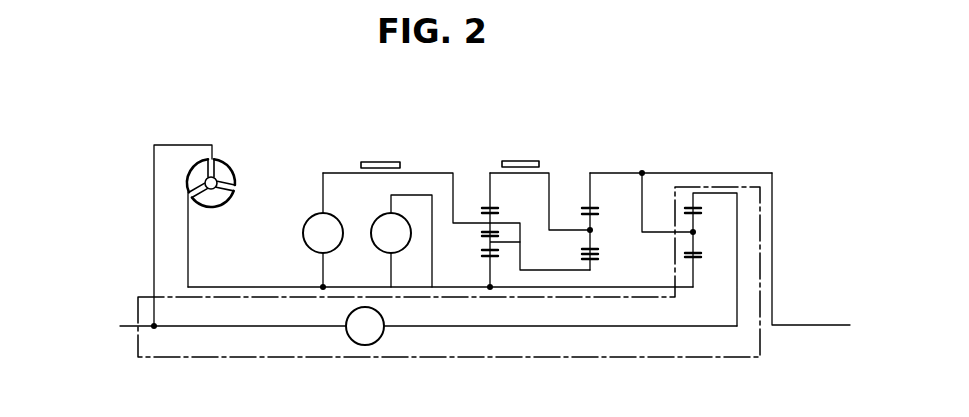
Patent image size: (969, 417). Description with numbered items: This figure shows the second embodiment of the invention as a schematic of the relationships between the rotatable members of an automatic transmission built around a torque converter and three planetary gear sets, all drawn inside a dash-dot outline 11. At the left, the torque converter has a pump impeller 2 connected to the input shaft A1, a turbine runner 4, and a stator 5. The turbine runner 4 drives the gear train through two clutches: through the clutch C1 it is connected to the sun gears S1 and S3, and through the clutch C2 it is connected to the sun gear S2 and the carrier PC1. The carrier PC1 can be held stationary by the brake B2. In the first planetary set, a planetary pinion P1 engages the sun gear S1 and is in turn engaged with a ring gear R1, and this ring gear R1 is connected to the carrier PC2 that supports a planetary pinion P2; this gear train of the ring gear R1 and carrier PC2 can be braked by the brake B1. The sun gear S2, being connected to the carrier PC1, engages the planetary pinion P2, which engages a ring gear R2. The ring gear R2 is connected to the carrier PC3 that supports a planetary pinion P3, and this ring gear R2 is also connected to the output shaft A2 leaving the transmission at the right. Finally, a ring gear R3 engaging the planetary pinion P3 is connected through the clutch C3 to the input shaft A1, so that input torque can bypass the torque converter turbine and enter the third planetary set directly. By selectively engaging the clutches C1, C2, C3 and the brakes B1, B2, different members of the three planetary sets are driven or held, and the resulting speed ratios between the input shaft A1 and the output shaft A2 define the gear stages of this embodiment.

The pump impeller 2 is at (236, 183).
The turbine runner 4 is at (187, 181).
The stator 5 is at (218, 208).
The transmission case 11 is at (729, 358).
The input shaft A1 is at (128, 332).
The output shaft A2 is at (822, 328).
The clutch C1 is at (401, 241).
The clutch C2 is at (323, 231).
The clutch C3 is at (365, 326).
The brake B1 is at (540, 181).
The brake B2 is at (456, 202).
The ring gear R1 is at (492, 198).
The ring gear R2 is at (592, 198).
The ring gear R3 is at (695, 200).
The planetary pinion P1 is at (481, 214).
The planetary pinion P2 is at (596, 240).
The planetary pinion P3 is at (697, 237).
The sun gear S1 is at (489, 273).
The sun gear S2 is at (597, 264).
The sun gear S3 is at (697, 284).
The carrier PC1 is at (473, 225).
The carrier PC2 is at (561, 228).
The carrier PC3 is at (657, 236).